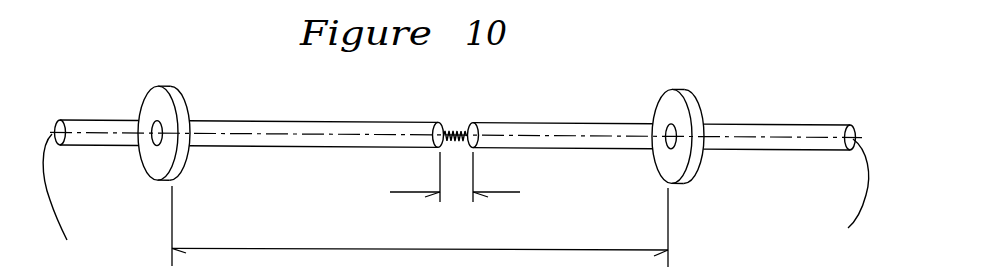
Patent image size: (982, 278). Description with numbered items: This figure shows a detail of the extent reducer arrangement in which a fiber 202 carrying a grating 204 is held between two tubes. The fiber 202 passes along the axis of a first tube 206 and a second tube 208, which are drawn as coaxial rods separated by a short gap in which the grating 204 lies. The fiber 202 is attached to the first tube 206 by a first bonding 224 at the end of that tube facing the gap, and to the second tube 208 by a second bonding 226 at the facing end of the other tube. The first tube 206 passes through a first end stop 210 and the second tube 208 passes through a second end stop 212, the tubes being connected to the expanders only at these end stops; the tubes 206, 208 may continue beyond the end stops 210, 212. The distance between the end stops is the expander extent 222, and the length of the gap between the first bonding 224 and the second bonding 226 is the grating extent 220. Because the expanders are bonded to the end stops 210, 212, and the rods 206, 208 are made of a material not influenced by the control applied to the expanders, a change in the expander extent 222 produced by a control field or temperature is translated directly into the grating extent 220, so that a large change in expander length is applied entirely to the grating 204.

The fiber 202 is at (68, 217).
The grating 204 is at (455, 125).
The first tube 206 is at (312, 112).
The second tube 208 is at (578, 120).
The first end stop 210 is at (168, 82).
The second end stop 212 is at (675, 87).
The grating extent 220 is at (455, 191).
The expander extent 222 is at (420, 232).
The first bonding 224 is at (438, 120).
The second bonding 226 is at (480, 152).